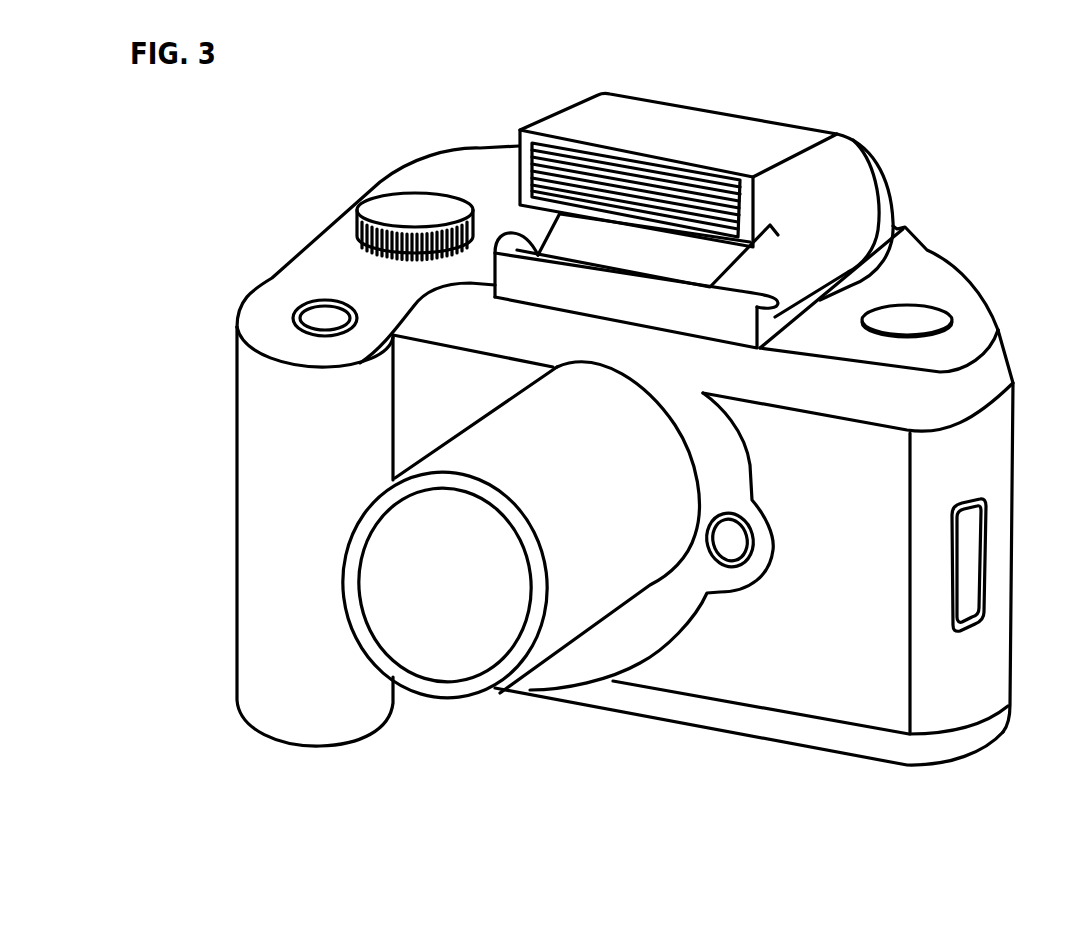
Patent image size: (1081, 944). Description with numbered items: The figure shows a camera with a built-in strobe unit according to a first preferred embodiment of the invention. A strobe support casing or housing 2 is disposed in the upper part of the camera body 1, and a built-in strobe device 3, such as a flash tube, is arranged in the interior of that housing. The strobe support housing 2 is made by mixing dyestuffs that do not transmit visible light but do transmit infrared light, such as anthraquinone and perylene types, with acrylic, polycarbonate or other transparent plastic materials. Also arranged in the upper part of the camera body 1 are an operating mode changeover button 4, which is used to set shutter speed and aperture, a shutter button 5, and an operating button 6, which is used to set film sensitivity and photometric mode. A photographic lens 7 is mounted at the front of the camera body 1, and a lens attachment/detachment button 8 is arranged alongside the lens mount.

The camera body 1 is at (252, 577).
The strobe support housing 2 is at (858, 197).
The built-in strobe device 3 is at (577, 165).
The operating mode changeover button 4 is at (415, 210).
The shutter button 5 is at (313, 311).
The operating button 6 is at (927, 318).
The photographic lens 7 is at (617, 580).
The lens attachment/detachment button 8 is at (748, 565).